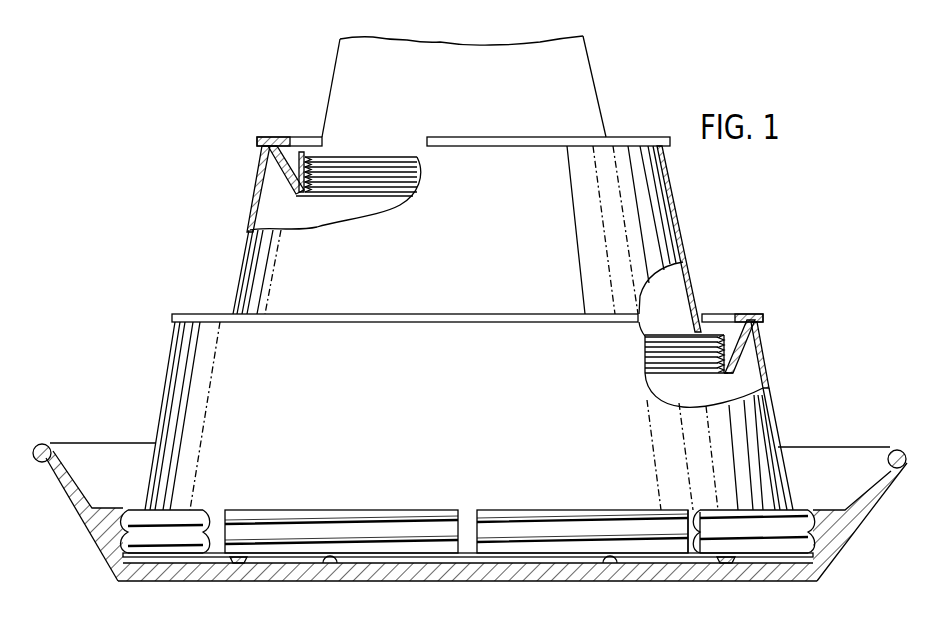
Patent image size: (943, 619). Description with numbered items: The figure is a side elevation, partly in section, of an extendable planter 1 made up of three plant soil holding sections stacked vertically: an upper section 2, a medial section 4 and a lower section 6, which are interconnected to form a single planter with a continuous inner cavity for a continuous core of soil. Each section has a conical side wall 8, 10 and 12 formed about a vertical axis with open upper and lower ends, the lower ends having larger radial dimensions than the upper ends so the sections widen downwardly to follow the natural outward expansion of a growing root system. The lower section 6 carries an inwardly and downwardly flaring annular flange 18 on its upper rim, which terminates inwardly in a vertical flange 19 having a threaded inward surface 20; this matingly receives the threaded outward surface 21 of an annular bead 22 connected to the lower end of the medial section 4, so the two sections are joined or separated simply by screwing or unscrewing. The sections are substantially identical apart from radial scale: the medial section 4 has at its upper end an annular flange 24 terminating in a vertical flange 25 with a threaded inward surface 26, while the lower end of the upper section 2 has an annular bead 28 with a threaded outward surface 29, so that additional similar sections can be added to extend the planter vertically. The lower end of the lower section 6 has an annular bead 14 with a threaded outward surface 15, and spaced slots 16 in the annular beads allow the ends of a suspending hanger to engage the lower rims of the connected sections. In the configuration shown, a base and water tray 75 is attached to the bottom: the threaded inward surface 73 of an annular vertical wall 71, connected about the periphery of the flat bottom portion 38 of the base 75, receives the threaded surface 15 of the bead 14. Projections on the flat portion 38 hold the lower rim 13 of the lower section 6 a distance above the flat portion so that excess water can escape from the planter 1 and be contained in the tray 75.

The extendable planter 1 is at (218, 168).
The upper section 2 is at (499, 91).
The medial section 4 is at (447, 233).
The lower section 6 is at (459, 408).
The conical side wall 8 is at (333, 79).
The conical side wall 10 is at (249, 243).
The conical side wall 12 is at (782, 438).
The lower rim 13 is at (360, 560).
The annular bead 14 is at (710, 517).
The threaded outward surface 15 is at (543, 518).
The spaced slots 16 is at (692, 537).
The annular flange 18 is at (757, 316).
The vertical flange 19 is at (719, 330).
The threaded inward surface 20 is at (717, 363).
The threaded outward surface 21 is at (650, 368).
The annular bead 22 is at (703, 330).
The annular flange 24 is at (268, 140).
The vertical flange 25 is at (305, 158).
The threaded inward surface 26 is at (315, 201).
The annular bead 28 is at (325, 158).
The threaded outward surface 29 is at (357, 188).
The flat bottom portion 38 is at (433, 576).
The annular vertical wall 71 is at (101, 513).
The threaded inward surface 73 is at (110, 550).
The base and water tray 75 is at (58, 482).